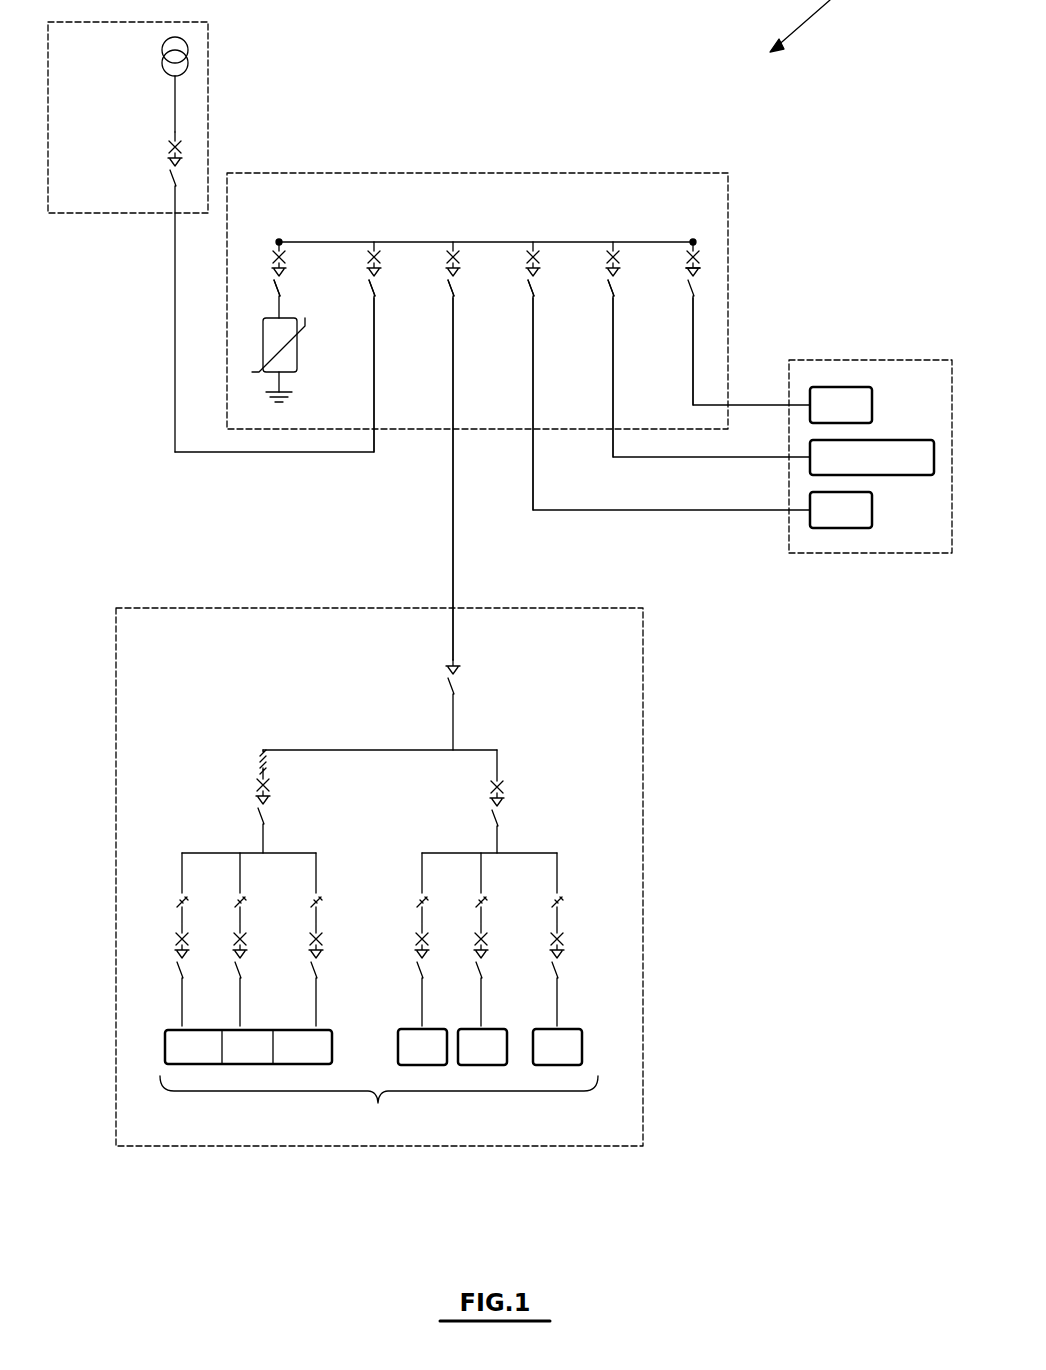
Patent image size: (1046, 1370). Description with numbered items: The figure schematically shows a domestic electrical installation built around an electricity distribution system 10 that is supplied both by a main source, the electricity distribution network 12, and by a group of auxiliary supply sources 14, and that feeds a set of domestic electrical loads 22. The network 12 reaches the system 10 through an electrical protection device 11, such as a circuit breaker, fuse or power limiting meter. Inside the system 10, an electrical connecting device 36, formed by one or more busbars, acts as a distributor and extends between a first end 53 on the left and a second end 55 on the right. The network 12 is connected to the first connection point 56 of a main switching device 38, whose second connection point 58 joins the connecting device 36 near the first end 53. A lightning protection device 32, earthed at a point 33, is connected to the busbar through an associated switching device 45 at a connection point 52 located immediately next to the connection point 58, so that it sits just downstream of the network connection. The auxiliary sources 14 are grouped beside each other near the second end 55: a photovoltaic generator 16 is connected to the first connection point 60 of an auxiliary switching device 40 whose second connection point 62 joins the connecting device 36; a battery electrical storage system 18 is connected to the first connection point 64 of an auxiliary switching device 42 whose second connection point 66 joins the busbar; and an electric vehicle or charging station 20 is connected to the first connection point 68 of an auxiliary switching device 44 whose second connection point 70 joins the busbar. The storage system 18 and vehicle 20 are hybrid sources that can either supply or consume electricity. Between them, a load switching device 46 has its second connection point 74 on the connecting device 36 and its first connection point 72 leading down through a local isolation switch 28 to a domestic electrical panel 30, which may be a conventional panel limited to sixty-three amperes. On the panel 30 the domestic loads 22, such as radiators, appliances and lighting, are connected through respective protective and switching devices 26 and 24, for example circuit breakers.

The electricity distribution system 10 is at (645, 165).
The electrical protection device 11 is at (210, 155).
The electricity distribution network 12 is at (208, 40).
The auxiliary supply source 14 is at (906, 360).
The photovoltaic generator 16 is at (841, 405).
The battery electrical storage system 18 is at (872, 457).
The electric vehicle charging station 20 is at (841, 510).
The domestic electrical loads 22 is at (379, 1082).
The protective and switching devices 24 is at (146, 941).
The protective and switching devices 26 is at (235, 777).
The switch 28 is at (475, 680).
The domestic electrical panel 30 is at (656, 719).
The lightning protection device 32 is at (298, 358).
The earth point 33 is at (255, 420).
The electrical connecting device 36 is at (409, 218).
The main switching device 38 is at (388, 296).
The auxiliary switching device 40 is at (718, 267).
The auxiliary switching device 42 is at (628, 296).
The auxiliary switching device 44 is at (548, 296).
The switching device 45 is at (300, 278).
The load switching device 46 is at (468, 296).
The connection point 52 is at (279, 242).
The first end 53 is at (250, 252).
The second end 55 is at (705, 242).
The first connection point 56 is at (375, 398).
The second connection point 58 is at (374, 242).
The first connection point 60 is at (694, 352).
The second connection point 62 is at (692, 242).
The first connection point 64 is at (614, 398).
The second connection point 66 is at (613, 242).
The first connection point 68 is at (534, 398).
The second connection point 70 is at (533, 242).
The first connection point 72 is at (454, 398).
The second connection point 74 is at (453, 242).